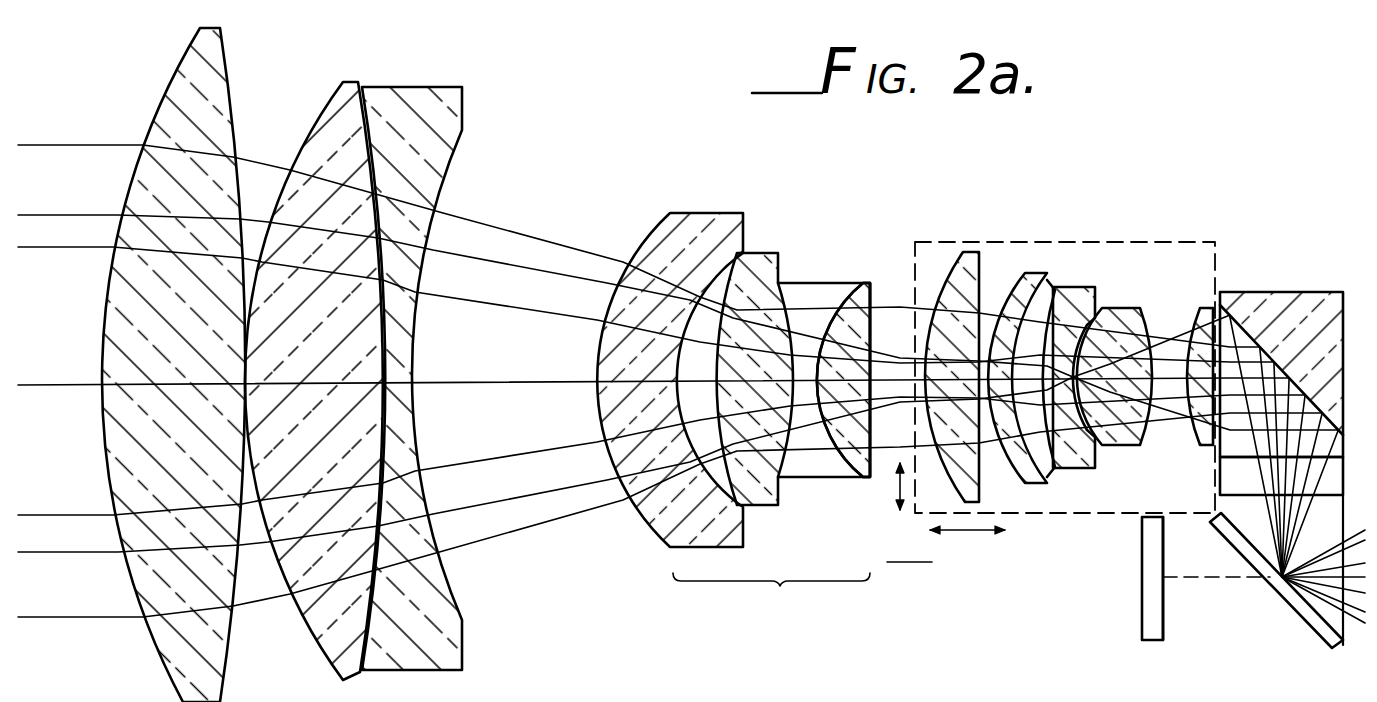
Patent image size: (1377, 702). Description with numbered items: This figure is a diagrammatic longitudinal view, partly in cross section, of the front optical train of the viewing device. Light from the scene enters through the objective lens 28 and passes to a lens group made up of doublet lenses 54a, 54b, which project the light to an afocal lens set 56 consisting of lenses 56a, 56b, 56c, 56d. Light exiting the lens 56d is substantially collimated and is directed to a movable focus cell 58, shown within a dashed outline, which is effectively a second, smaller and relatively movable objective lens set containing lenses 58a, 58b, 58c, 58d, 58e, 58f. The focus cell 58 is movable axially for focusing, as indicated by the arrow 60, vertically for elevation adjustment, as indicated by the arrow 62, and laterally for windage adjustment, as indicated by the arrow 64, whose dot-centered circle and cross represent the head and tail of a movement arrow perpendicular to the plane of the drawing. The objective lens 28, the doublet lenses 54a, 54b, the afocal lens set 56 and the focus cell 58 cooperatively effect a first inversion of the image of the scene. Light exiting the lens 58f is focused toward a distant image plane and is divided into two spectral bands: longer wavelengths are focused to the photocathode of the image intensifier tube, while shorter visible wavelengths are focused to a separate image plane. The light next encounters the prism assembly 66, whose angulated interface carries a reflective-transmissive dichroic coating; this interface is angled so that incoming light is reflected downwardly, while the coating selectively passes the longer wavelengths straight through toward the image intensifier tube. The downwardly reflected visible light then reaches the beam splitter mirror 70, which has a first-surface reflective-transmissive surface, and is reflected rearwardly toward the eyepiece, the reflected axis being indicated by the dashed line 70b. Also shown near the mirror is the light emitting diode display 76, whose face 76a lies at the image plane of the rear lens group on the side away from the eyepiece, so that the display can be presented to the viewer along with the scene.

The objective lens 28 is at (193, 55).
The doublet lens 54a is at (340, 93).
The doublet lens 54b is at (433, 85).
The afocal lens set 56 is at (771, 599).
The lens 56a is at (703, 212).
The lens 56b is at (771, 253).
The lens 56c is at (810, 282).
The lens 56d is at (877, 282).
The focus cell 58 is at (1135, 240).
The lens 58a is at (972, 250).
The lens 58b is at (1037, 270).
The lens 58c is at (1057, 460).
The lens 58d is at (1087, 287).
The lens 58e is at (1134, 295).
The lens 58f is at (1215, 290).
The arrow 60 is at (970, 530).
The arrow 62 is at (898, 492).
The arrow 64 is at (910, 563).
The prism assembly 66 is at (1305, 292).
The beam splitter mirror 70 is at (1322, 635).
The reflected optical axis 70b is at (1192, 578).
The light emitting diode (LED) display 76 is at (1142, 547).
The face 76a is at (1163, 623).